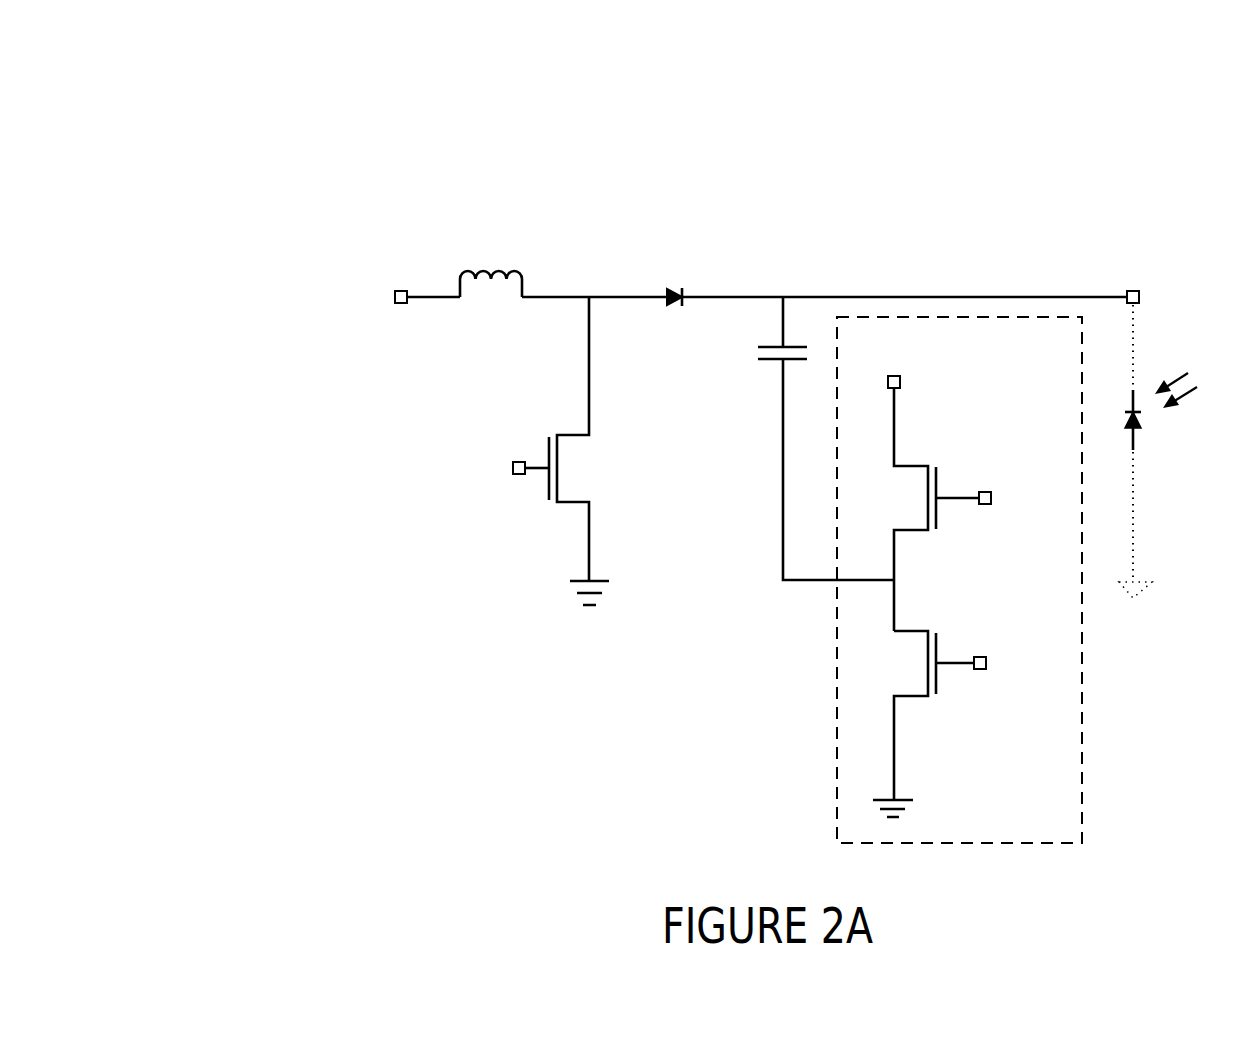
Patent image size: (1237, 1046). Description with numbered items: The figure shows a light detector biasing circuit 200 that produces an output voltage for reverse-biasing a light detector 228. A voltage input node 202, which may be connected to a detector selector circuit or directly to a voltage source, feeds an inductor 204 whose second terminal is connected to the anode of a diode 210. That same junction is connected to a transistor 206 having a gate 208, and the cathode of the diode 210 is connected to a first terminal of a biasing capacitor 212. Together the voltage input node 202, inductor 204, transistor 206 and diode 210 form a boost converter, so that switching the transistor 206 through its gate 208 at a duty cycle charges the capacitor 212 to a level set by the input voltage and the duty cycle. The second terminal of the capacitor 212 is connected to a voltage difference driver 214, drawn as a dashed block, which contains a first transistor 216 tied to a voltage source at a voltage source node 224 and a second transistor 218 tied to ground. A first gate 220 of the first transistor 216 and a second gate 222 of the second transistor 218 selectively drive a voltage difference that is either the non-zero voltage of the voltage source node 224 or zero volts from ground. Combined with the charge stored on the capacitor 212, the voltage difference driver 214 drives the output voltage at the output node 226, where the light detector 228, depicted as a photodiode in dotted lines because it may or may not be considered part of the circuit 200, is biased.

The circuit 200 is at (280, 92).
The voltage input node 202 is at (401, 291).
The inductor 204 is at (477, 271).
The transistor 206 is at (589, 416).
The gate 208 is at (513, 468).
The diode 210 is at (678, 290).
The capacitor 212 is at (781, 362).
The voltage difference driver 214 is at (1070, 836).
The first transistor 216 is at (894, 456).
The second transistor 218 is at (894, 620).
The first gate 220 is at (992, 498).
The second gate 222 is at (987, 663).
The voltage source node 224 is at (894, 376).
The output node 226 is at (1133, 291).
The light detector 228 is at (1138, 428).